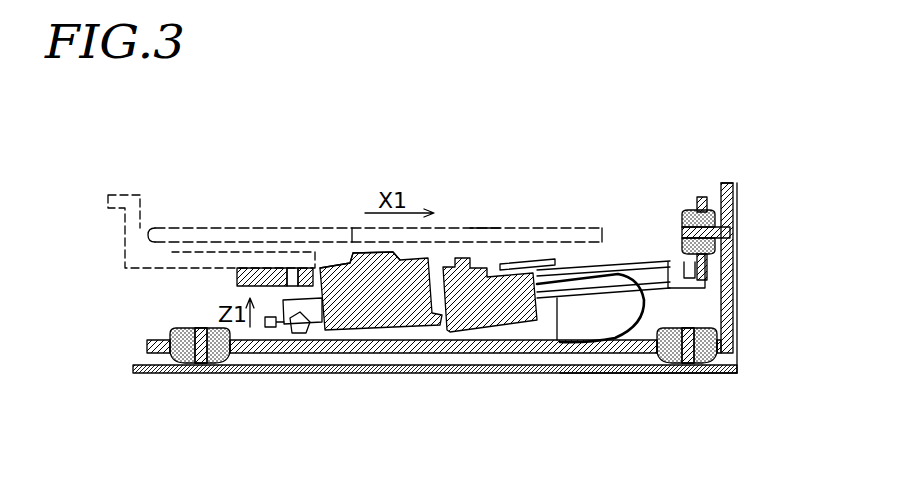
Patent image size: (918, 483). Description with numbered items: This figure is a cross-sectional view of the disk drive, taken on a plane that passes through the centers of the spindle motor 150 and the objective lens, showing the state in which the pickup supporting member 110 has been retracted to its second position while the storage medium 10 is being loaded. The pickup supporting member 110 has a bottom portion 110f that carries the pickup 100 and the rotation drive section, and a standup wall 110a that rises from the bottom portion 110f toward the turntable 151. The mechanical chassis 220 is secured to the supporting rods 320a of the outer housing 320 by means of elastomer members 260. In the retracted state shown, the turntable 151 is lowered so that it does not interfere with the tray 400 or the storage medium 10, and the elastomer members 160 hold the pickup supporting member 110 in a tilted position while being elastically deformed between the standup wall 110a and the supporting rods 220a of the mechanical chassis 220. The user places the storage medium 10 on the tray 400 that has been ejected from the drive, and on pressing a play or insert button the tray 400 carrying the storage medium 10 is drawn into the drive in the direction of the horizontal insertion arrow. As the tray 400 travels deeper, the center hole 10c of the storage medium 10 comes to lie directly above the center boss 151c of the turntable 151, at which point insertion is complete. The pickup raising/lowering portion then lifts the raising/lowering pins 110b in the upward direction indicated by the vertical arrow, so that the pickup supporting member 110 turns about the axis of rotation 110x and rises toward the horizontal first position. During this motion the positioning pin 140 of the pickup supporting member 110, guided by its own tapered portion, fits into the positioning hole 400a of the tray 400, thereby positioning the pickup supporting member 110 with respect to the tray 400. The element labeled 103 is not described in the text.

The storage medium 10 is at (485, 228).
The center hole 10c is at (352, 228).
The pickup 100 is at (490, 262).
The base plate portion 103 is at (617, 373).
The pickup supporting member 110 is at (673, 262).
The standup wall 110a is at (722, 192).
The raising/lowering pins 110b is at (267, 327).
The bottom portion 110f is at (553, 300).
The axis of rotation 110x is at (733, 238).
The positioning pin 140 is at (290, 334).
The spindle motor 150 is at (382, 332).
The turntable 151 is at (322, 268).
The center boss 151c is at (400, 257).
The elastomer members 160 is at (697, 197).
The mechanical chassis 220 is at (488, 353).
The supporting rods 220a is at (678, 260).
The elastomer members 260 is at (185, 364).
The outer housing 320 is at (327, 373).
The supporting rods 320a is at (223, 364).
The tray 400 is at (172, 228).
The positioning hole 400a is at (292, 268).